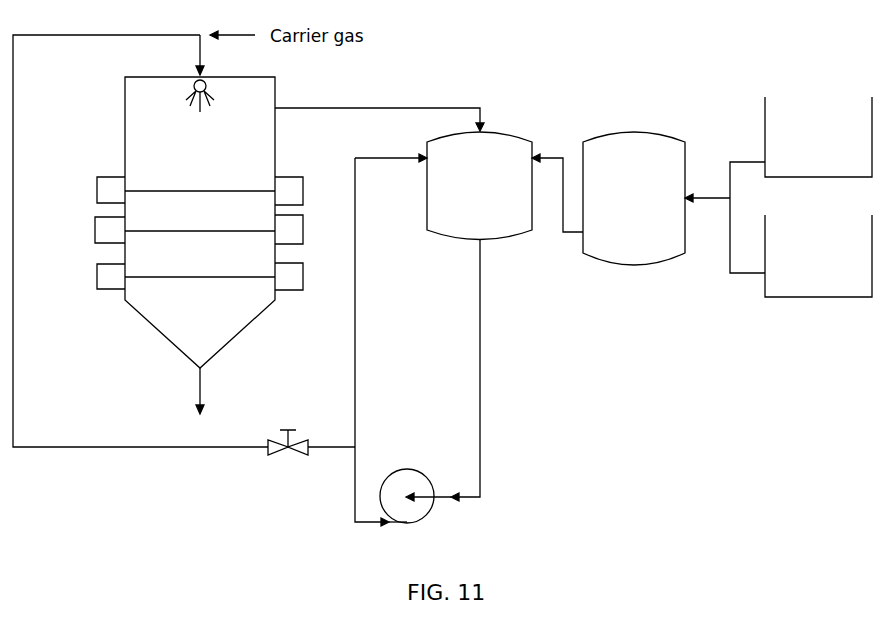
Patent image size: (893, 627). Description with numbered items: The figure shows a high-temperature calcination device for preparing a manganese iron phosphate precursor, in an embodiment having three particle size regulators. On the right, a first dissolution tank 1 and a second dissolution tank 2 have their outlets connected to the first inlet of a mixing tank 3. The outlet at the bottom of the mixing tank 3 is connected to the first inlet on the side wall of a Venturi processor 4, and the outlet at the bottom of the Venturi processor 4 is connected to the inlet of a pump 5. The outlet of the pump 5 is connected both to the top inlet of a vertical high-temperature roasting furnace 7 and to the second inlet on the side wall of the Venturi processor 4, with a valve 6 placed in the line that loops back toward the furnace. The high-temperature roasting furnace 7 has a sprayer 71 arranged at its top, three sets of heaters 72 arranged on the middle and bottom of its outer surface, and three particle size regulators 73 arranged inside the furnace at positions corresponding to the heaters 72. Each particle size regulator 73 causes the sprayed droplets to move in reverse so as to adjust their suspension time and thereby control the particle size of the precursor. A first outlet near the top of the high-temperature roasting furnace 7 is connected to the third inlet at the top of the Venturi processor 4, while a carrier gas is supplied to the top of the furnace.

The first dissolution tank 1 is at (818, 137).
The second dissolution tank 2 is at (818, 256).
The mixing tank 3 is at (634, 198).
The Venturi processor 4 is at (479, 186).
The pump 5 is at (407, 523).
The valve 6 is at (297, 456).
The vertical high-temperature roasting furnace 7 is at (125, 108).
The sprayer 71 is at (200, 106).
The heaters 72 is at (110, 178).
The particle size regulator 73 is at (200, 222).